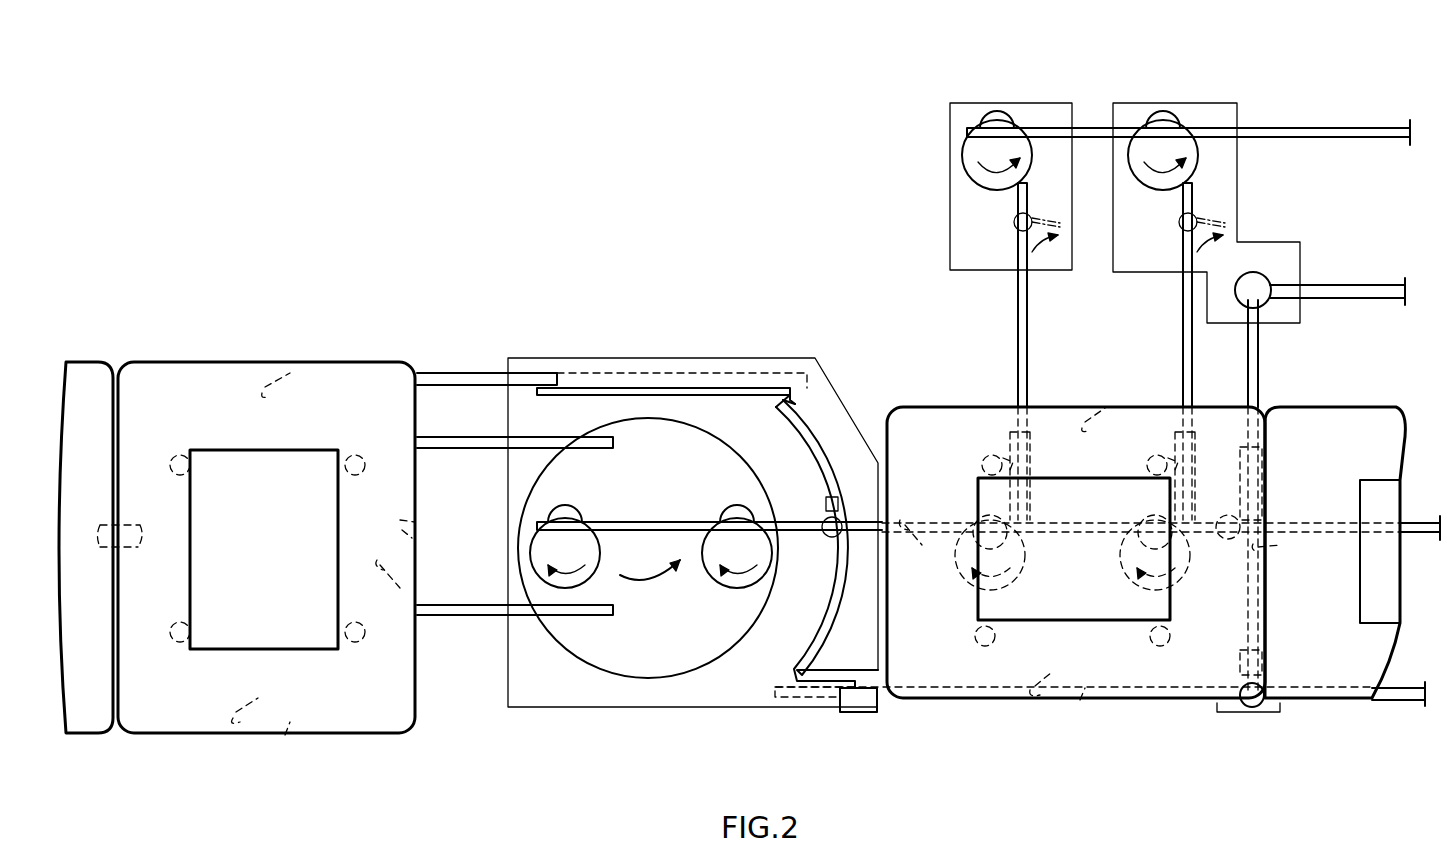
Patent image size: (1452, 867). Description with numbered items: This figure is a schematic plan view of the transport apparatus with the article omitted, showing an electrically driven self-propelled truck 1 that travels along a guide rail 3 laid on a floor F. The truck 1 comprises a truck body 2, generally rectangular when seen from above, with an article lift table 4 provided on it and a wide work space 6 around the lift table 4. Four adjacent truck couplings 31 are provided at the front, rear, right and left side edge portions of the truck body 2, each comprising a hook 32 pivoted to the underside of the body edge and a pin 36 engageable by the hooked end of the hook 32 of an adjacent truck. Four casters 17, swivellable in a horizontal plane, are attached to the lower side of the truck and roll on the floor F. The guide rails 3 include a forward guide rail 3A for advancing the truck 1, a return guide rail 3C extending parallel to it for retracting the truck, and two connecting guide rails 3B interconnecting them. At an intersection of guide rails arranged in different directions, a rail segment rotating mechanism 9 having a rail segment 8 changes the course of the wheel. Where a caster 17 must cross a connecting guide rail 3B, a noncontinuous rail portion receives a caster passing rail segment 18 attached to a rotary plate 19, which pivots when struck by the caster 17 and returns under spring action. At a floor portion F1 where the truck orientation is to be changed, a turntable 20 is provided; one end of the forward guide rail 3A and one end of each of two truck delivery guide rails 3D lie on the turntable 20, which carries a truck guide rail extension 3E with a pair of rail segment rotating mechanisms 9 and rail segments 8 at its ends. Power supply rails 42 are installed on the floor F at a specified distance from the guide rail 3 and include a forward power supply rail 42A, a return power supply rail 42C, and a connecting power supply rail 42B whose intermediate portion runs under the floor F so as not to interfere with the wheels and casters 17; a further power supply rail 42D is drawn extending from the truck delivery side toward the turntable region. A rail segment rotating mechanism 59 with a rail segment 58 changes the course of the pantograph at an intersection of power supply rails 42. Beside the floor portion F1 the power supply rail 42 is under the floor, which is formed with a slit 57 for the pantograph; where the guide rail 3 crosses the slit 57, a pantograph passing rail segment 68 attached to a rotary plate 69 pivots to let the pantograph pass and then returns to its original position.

The self-propelled truck 1 is at (86, 360).
The truck body 2 is at (195, 378).
The guide rail 3 is at (1420, 523).
The forward guide rail 3A is at (930, 520).
The connecting guide rail 3B is at (1029, 300).
The return guide rail 3C is at (1082, 127).
The truck delivery guide rail 3D is at (463, 437).
The truck guide rail extension 3E is at (645, 522).
The article lift table 4 is at (306, 455).
The work space 6 is at (180, 720).
The rail segment 8 is at (567, 512).
The rail segment rotating mechanism 9 is at (532, 549).
The caster 17 is at (360, 476).
The caster passing rail segment 18 is at (1012, 238).
The rotary plate 19 is at (1014, 220).
The turntable 20 is at (670, 680).
The adjacent truck coupling 31 is at (120, 522).
The hook 32 is at (392, 576).
The pin 36 is at (418, 521).
The power supply rail 42 is at (1405, 702).
The forward power supply rail 42A is at (866, 712).
The connecting power supply rail 42B is at (1262, 358).
The return power supply rail 42C is at (1383, 285).
The conveyor shaft section D 42D is at (465, 372).
The slit 57 is at (816, 631).
The rail segment 58 is at (1270, 283).
The rail segment rotating mechanism 59 is at (1240, 280).
The pantograph passing rail segment 68 is at (840, 536).
The rotary plate 69 is at (828, 500).
The floor F is at (832, 318).
The floor portion F1 is at (518, 706).